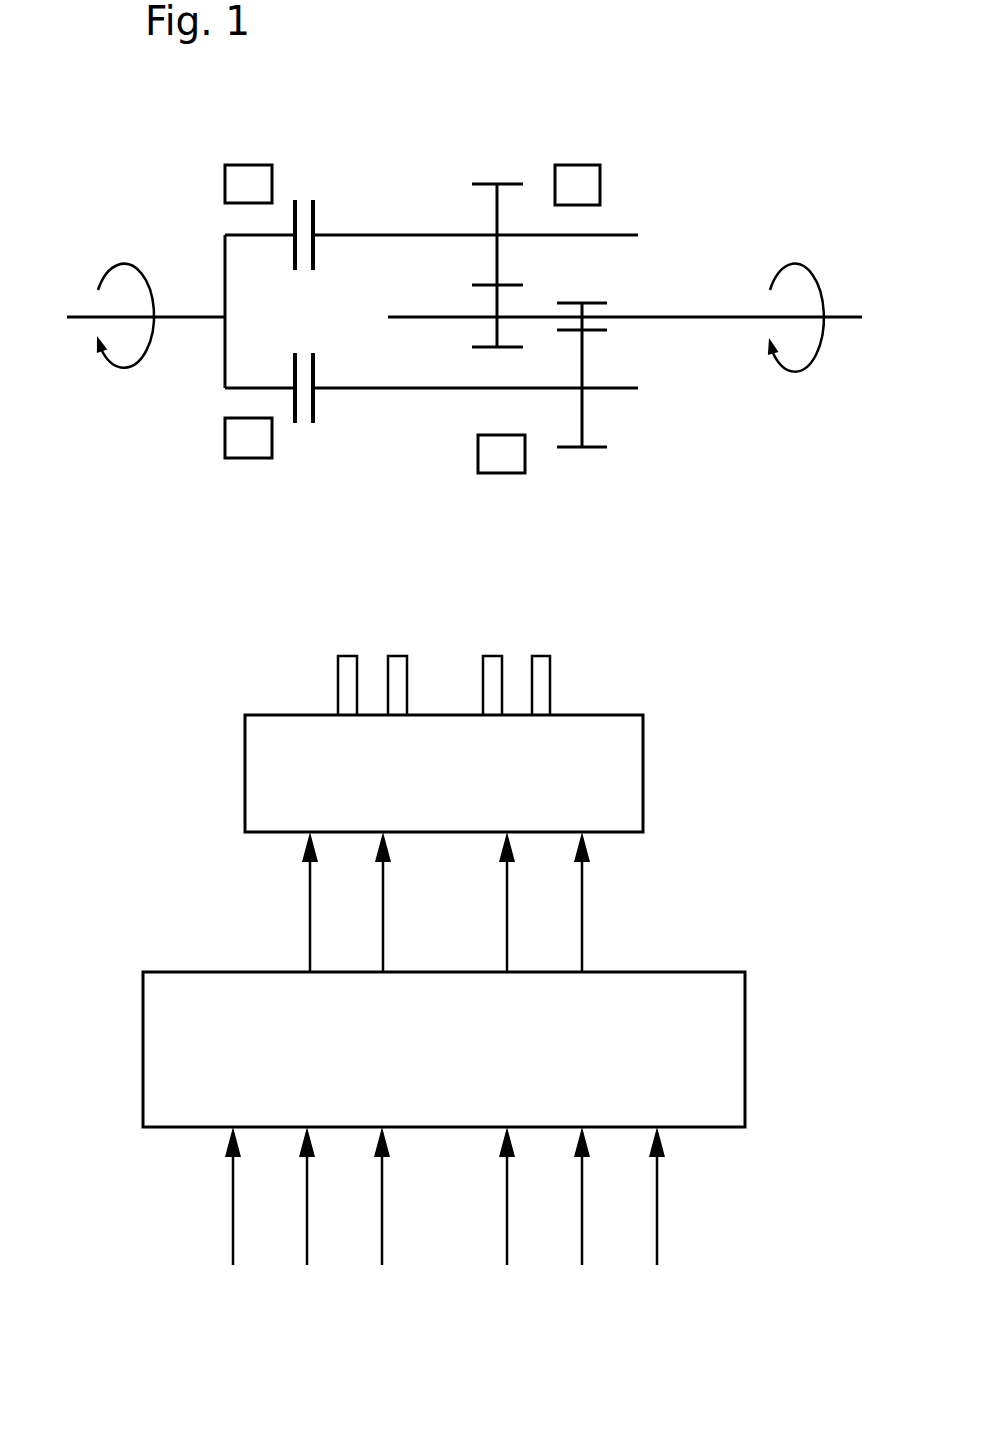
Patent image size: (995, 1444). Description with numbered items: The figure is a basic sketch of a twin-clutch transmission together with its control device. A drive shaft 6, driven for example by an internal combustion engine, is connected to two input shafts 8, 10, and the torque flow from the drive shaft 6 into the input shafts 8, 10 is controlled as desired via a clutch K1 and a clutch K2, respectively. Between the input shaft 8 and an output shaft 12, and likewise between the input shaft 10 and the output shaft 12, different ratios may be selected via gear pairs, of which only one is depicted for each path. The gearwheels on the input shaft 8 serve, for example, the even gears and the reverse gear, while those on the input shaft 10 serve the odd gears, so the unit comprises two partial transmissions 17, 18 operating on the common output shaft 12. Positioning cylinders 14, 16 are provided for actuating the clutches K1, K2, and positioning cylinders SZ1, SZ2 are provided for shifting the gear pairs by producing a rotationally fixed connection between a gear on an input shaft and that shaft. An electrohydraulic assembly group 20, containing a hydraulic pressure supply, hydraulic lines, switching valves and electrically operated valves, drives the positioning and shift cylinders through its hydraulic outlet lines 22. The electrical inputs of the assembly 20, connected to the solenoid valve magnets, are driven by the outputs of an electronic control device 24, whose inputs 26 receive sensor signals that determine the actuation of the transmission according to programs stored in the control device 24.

The drive shaft 6 is at (82, 318).
The input shaft 8 is at (400, 235).
The input shaft 10 is at (392, 388).
The output shaft 12 is at (717, 317).
The positioning cylinder 14 is at (237, 182).
The positioning cylinder 16 is at (237, 437).
The partial transmission 17 is at (595, 122).
The partial transmission 18 is at (282, 552).
The clutch K1 is at (303, 208).
The clutch K2 is at (305, 418).
The positioning cylinder SZ1 is at (593, 183).
The positioning cylinder SZ2 is at (515, 460).
The electrohydraulic assembly group 20 is at (458, 790).
The hydraulic outlet lines 22 is at (557, 652).
The electronic control device 24 is at (460, 1072).
The inputs 26 is at (665, 1275).